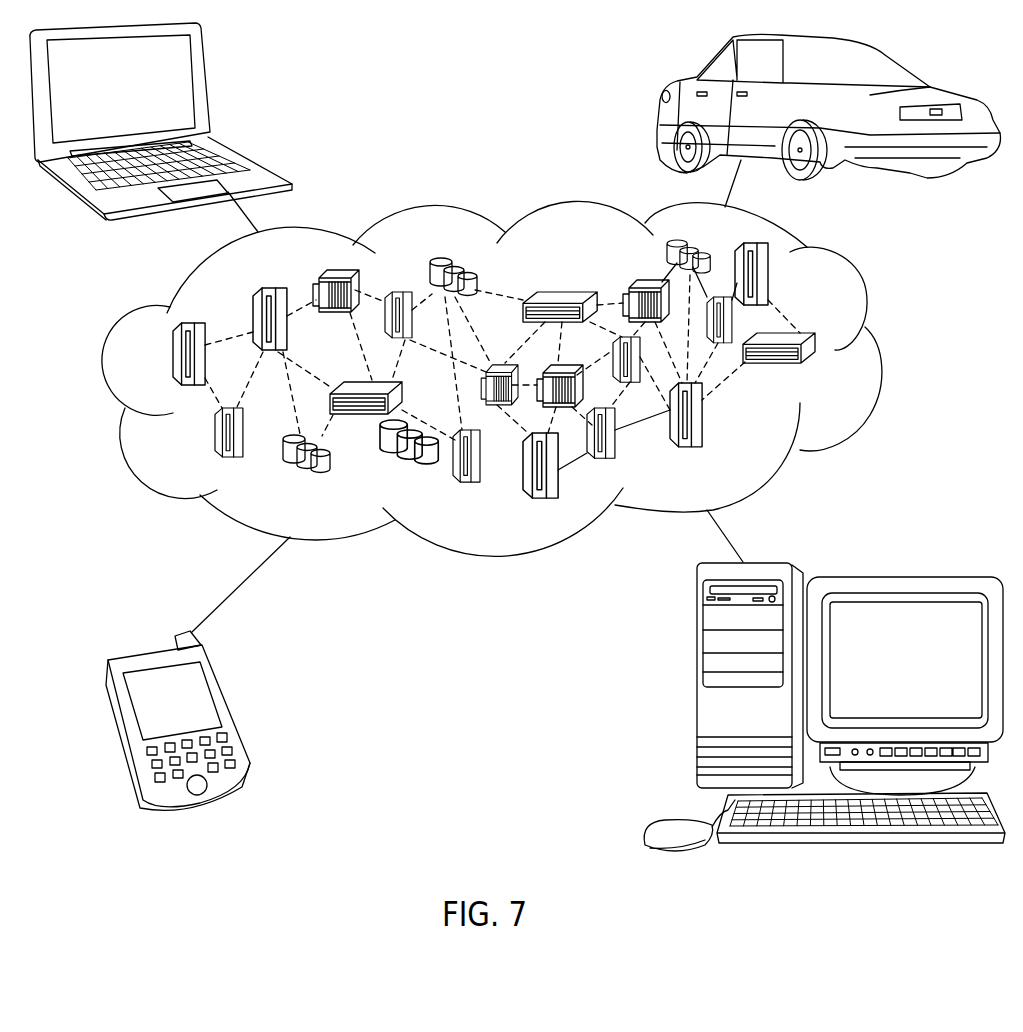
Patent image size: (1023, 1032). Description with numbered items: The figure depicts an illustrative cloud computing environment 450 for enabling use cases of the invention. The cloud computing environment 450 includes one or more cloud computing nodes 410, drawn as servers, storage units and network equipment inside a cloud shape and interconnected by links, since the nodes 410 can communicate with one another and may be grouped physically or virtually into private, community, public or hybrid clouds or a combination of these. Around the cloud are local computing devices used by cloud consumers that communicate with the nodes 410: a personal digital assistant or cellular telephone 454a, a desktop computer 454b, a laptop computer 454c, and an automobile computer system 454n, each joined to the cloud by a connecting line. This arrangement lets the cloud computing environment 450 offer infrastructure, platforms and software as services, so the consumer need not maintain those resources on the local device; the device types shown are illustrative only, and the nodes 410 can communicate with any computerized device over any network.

The cloud computing nodes 410 is at (560, 378).
The cloud computing environment 450 is at (835, 373).
The personal digital assistant (PDA) or cellular telephone 454a is at (228, 698).
The desktop computer 454b is at (697, 690).
The laptop computer 454c is at (207, 80).
The automobile computer system 454n is at (672, 86).